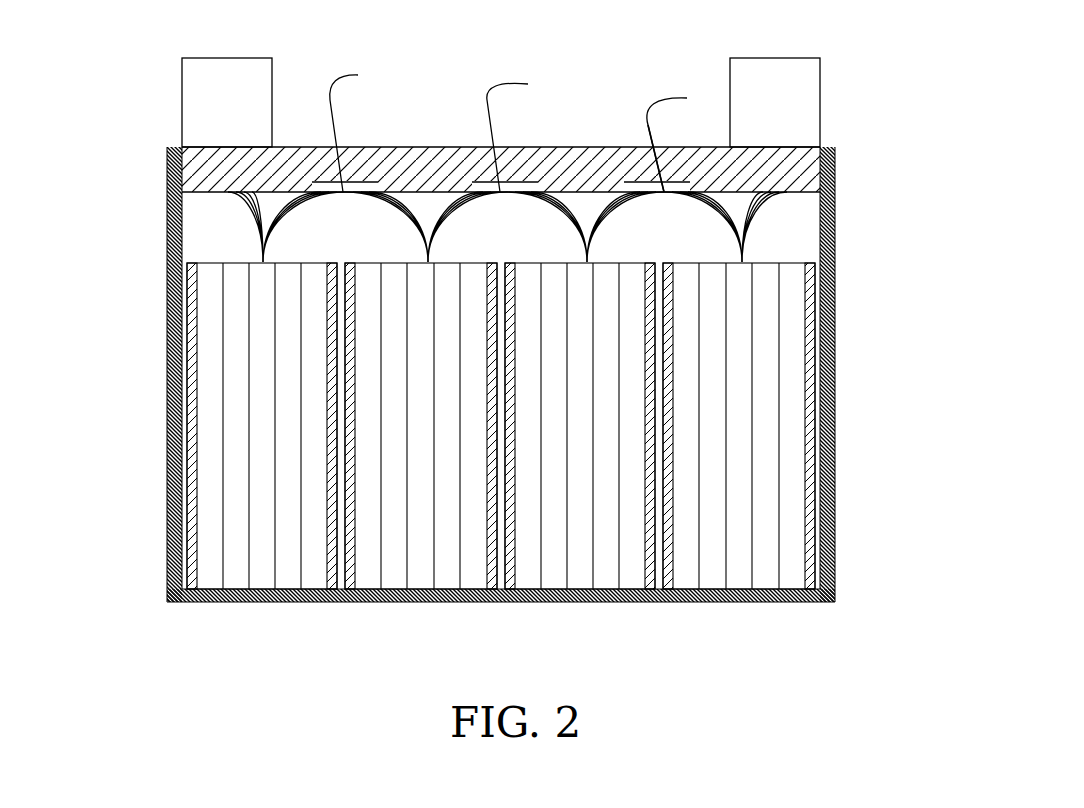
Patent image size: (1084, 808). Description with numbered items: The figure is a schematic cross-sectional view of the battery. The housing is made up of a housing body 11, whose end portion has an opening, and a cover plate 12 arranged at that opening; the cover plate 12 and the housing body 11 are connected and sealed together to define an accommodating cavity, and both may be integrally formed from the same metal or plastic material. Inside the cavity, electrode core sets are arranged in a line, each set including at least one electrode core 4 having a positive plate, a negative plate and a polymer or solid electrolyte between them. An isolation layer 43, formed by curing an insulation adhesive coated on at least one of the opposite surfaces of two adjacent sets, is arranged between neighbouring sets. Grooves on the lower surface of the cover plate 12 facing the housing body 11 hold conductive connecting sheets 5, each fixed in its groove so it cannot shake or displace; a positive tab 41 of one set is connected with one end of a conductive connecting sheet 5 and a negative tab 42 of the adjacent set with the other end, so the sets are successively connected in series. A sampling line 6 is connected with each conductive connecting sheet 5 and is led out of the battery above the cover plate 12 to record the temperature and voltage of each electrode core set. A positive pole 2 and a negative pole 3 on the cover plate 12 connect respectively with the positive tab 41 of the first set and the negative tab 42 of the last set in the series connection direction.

The positive pole 2 is at (810, 77).
The negative pole 3 is at (188, 77).
The electrode core 4 is at (750, 553).
The conductive connecting sheet 5 is at (637, 153).
The sampling line 6 is at (485, 90).
The housing body 11 is at (168, 478).
The cover plate 12 is at (170, 147).
The positive tab 41 is at (763, 213).
The negative tab 42 is at (250, 230).
The isolation layer 43 is at (810, 547).